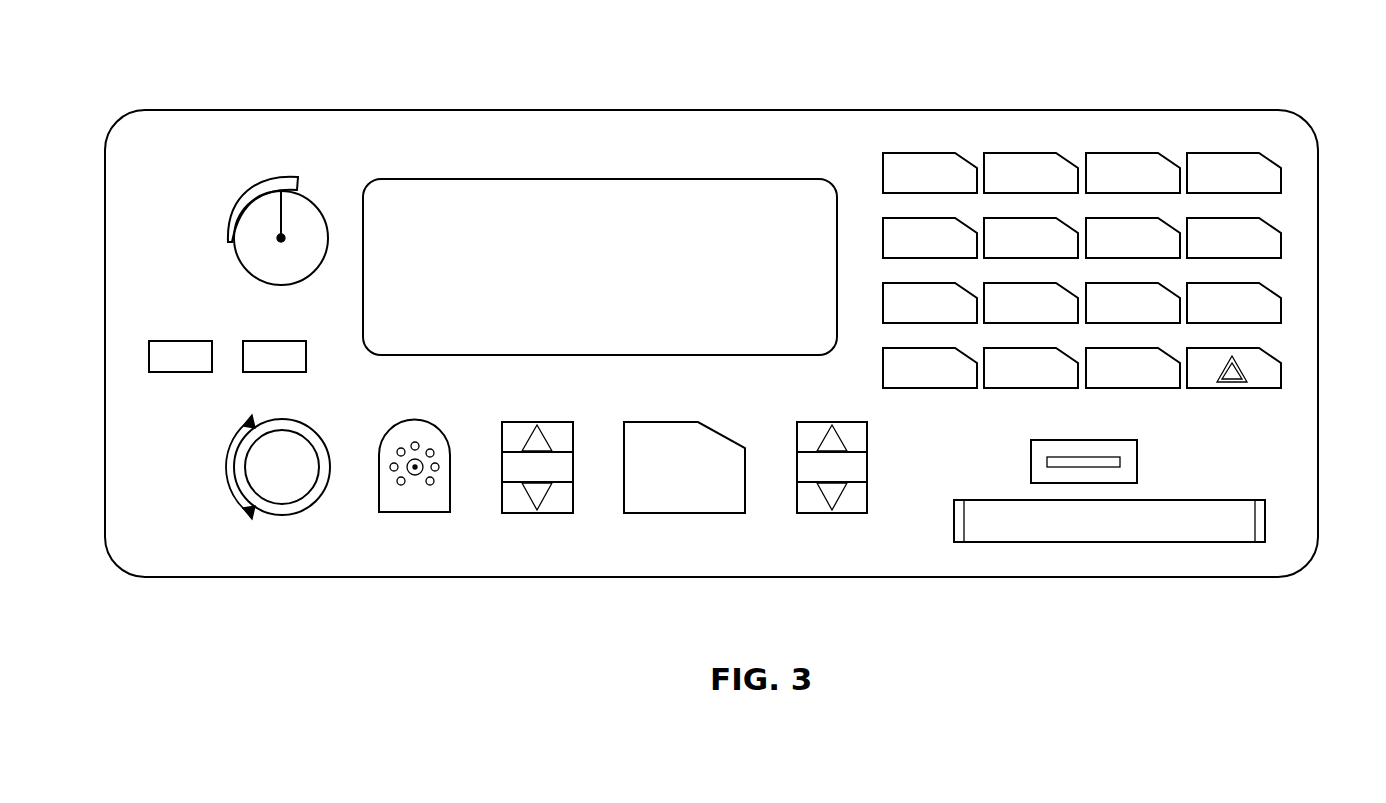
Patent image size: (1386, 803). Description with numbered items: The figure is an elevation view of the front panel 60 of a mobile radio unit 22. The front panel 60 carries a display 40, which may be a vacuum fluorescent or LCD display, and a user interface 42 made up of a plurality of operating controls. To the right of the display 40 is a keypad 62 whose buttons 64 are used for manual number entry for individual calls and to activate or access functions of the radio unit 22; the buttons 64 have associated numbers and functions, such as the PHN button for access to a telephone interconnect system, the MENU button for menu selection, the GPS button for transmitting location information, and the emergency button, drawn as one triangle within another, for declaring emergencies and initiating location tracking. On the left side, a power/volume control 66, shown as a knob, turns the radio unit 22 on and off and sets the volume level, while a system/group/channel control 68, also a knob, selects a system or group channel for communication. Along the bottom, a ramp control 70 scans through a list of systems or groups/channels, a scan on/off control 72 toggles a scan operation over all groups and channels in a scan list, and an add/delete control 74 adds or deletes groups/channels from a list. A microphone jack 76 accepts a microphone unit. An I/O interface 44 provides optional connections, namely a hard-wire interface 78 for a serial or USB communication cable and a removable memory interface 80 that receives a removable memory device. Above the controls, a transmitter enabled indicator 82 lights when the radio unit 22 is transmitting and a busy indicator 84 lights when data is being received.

The radio unit 22 is at (118, 92).
The front panel 60 is at (222, 109).
The display 40 is at (423, 179).
The power/volume control 66 is at (237, 250).
The transmitter enabled indicator 82 is at (180, 341).
The busy indicator 84 is at (273, 341).
The system/group/channel control 68 is at (313, 430).
The microphone jack 76 is at (421, 512).
The ramp control 70 is at (541, 513).
The scan on/off control 72 is at (683, 513).
The add/delete control 74 is at (832, 513).
The buttons 64 is at (900, 153).
The keypad 62 is at (1105, 271).
The I/O interface 44 is at (1162, 407).
The user interface 42 is at (1290, 393).
The hard-wire interface 78 is at (1083, 440).
The removable memory interface 80 is at (1010, 500).